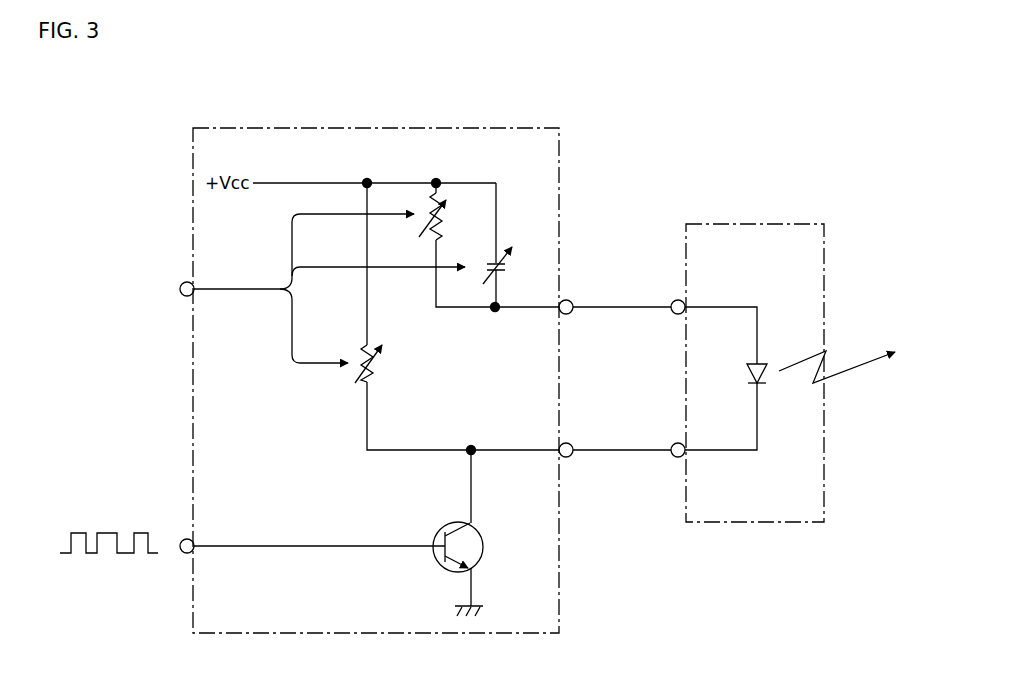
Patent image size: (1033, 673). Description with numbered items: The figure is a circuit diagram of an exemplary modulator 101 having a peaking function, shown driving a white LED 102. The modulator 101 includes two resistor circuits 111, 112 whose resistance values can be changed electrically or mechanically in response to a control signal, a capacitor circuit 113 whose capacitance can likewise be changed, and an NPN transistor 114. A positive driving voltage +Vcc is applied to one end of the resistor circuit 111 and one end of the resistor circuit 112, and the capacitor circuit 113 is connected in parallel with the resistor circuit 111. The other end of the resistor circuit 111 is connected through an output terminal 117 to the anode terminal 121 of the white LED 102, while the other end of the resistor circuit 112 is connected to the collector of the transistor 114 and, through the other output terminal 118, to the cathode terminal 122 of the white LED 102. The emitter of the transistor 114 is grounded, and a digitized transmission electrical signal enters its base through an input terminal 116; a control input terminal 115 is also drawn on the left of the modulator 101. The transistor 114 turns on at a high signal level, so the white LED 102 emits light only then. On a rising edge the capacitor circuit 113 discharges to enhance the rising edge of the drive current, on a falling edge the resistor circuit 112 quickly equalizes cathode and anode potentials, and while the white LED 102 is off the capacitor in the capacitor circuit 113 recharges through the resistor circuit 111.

The modulator 101 is at (387, 127).
The white LED 102 is at (767, 363).
The resistor circuit 111 is at (413, 192).
The resistor circuit 112 is at (386, 347).
The capacitor circuit 113 is at (506, 243).
The NPN transistor 114 is at (440, 534).
The control input terminal 115 is at (184, 296).
The input terminal 116 is at (184, 553).
The output terminal 117 is at (563, 298).
The output terminal 118 is at (563, 441).
The anode terminal 121 is at (677, 299).
The cathode terminal 122 is at (677, 443).